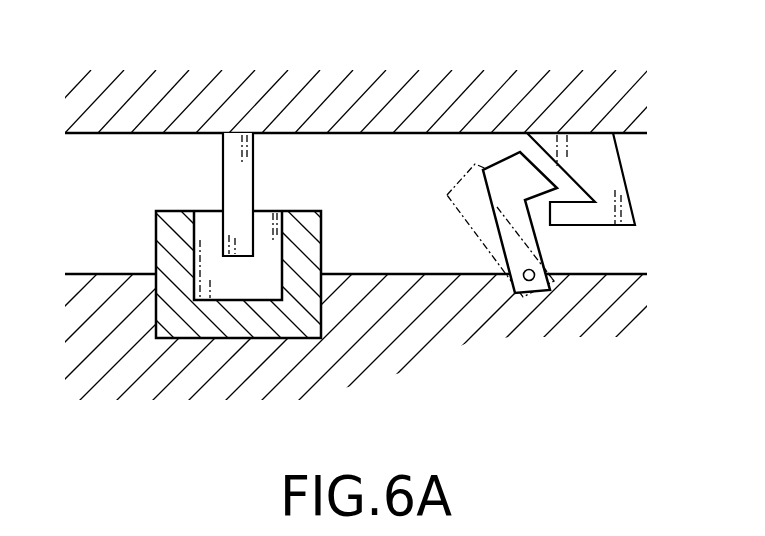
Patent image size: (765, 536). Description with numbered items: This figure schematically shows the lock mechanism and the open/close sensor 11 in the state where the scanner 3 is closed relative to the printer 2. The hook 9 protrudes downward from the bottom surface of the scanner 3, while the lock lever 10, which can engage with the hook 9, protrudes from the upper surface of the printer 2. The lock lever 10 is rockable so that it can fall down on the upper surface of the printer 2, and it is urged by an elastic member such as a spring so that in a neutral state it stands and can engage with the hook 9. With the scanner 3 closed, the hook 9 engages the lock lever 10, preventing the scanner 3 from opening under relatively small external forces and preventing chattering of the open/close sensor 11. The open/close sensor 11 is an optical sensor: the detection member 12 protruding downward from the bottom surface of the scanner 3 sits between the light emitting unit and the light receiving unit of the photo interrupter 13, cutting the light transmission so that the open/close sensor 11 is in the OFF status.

The printer 2 is at (447, 380).
The scanner 3 is at (388, 50).
The hook 9 is at (613, 183).
The lock lever 10 is at (543, 253).
The open/close sensor 11 is at (220, 269).
The detection member 12 is at (245, 178).
The photo interrupter 13 is at (322, 244).